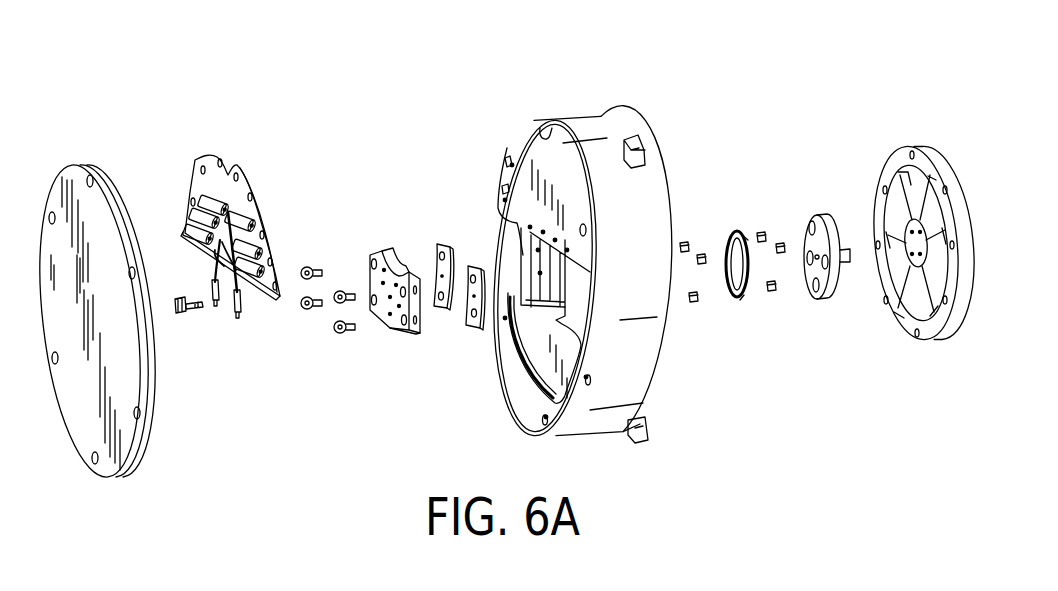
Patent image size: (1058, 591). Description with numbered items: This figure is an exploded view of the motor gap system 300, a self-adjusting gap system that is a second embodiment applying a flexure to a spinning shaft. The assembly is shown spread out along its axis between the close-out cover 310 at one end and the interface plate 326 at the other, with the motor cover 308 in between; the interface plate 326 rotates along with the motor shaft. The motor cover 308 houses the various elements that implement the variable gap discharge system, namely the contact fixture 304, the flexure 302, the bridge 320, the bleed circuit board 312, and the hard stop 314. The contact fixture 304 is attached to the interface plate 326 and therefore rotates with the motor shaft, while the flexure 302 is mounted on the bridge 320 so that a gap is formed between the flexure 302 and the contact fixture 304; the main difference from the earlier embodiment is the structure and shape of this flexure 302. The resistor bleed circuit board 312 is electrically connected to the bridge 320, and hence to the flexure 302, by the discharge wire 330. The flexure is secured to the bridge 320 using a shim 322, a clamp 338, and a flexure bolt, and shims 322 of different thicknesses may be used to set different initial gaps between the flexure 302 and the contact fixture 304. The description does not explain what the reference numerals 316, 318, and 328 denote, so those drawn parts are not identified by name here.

The motor gap system 300 is at (262, 68).
The flexure 302 is at (730, 232).
The contact fixture 304 is at (830, 302).
The motor cover 308 is at (553, 122).
The close-out cover 310 is at (82, 172).
The bleed circuit board 312 is at (195, 185).
The hard stop 314 is at (187, 320).
The screws 316 is at (348, 331).
The spacer plates 318 is at (470, 322).
The bridge 320 is at (378, 255).
The shim 322 is at (697, 302).
The interface plate 326 is at (902, 148).
The capacitors 328 is at (232, 222).
The discharge wire 330 is at (237, 298).
The clamp 338 is at (770, 295).